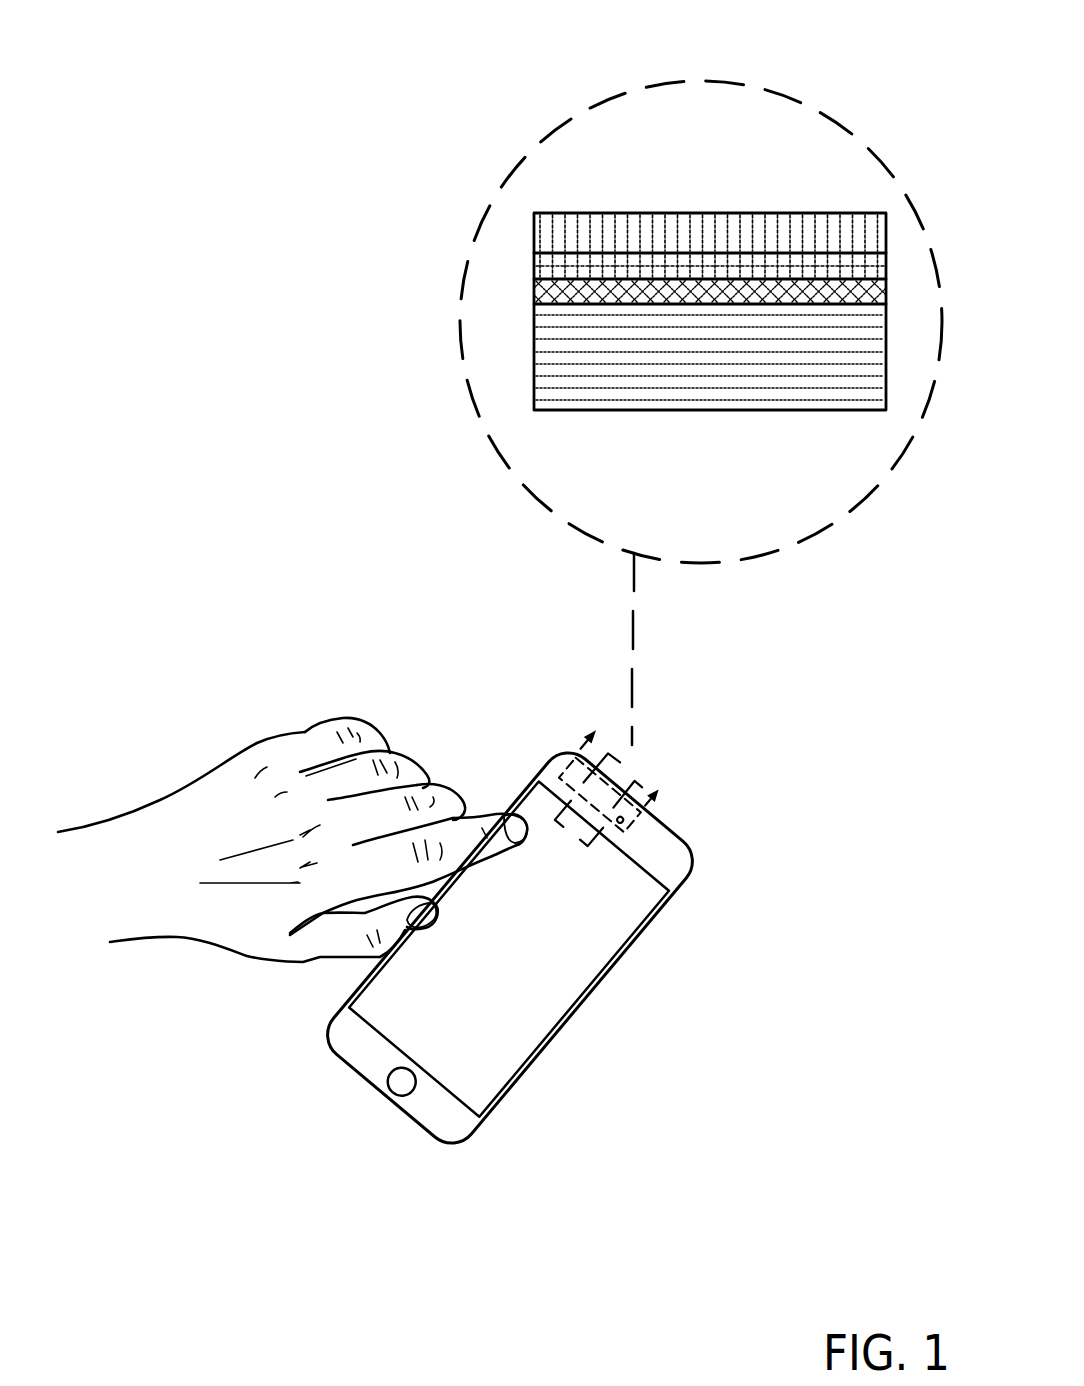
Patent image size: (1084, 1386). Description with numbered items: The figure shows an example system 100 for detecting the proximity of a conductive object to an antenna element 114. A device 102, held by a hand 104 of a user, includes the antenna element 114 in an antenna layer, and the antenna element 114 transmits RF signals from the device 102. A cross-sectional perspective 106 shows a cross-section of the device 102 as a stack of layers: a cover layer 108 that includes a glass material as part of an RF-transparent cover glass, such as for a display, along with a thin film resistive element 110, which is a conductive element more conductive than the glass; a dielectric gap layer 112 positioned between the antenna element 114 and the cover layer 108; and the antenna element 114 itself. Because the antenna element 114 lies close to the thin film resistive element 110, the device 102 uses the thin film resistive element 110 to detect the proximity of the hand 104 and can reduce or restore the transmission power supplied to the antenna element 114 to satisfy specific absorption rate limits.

The system 100 is at (243, 75).
The device 102 is at (523, 793).
The hand 104 is at (247, 937).
The cross-sectional perspective 106 is at (470, 240).
The cover layer 108 is at (570, 222).
The thin film resistive element 110 is at (540, 268).
The dielectric gap layer 112 is at (616, 301).
The antenna element 114 is at (817, 366).